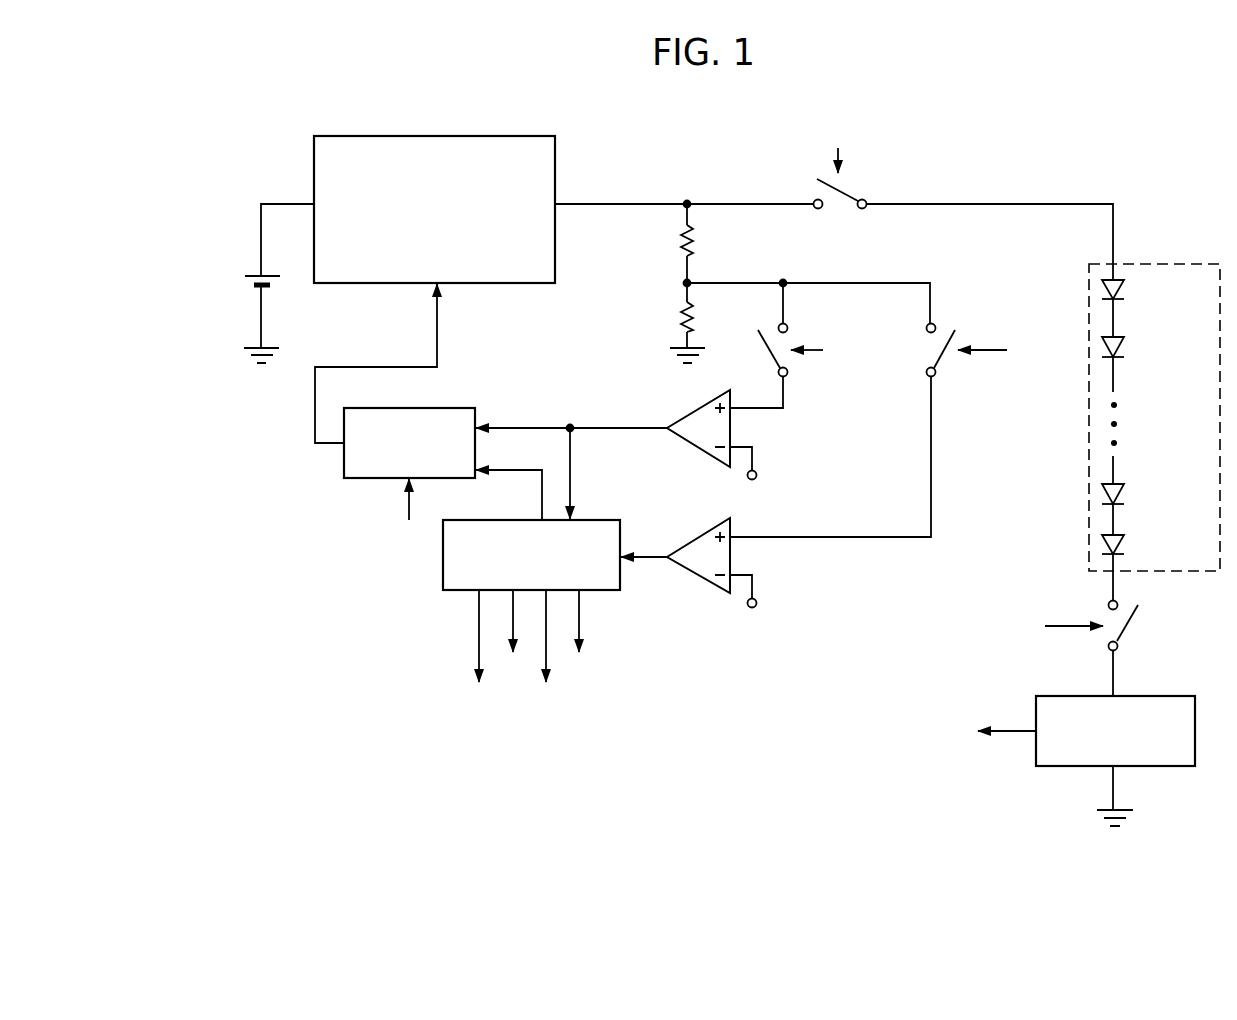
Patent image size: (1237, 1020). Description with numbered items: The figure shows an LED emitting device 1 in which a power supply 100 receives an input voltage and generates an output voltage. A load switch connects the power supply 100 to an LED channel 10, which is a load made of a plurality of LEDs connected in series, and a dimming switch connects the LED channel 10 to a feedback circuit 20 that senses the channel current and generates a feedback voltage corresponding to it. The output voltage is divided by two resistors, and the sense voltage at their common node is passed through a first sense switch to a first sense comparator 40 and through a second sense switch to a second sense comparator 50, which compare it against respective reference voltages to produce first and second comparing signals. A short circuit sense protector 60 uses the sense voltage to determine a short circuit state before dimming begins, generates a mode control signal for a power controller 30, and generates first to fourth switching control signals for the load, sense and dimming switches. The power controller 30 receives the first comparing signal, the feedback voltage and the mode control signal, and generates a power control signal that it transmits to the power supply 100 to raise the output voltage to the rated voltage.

The LED emitting device 1 is at (1117, 160).
The power supply 100 is at (353, 284).
The power controller 30 is at (344, 467).
The first sense comparator 40 is at (697, 412).
The second sense comparator 50 is at (700, 540).
The short circuit sense protector 60 is at (608, 518).
The LED channel 10 is at (1089, 418).
The feedback circuit 20 is at (1145, 695).